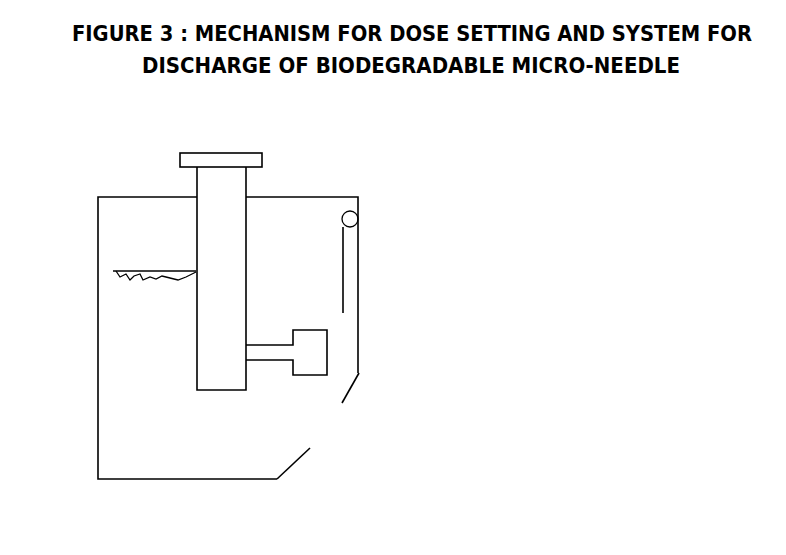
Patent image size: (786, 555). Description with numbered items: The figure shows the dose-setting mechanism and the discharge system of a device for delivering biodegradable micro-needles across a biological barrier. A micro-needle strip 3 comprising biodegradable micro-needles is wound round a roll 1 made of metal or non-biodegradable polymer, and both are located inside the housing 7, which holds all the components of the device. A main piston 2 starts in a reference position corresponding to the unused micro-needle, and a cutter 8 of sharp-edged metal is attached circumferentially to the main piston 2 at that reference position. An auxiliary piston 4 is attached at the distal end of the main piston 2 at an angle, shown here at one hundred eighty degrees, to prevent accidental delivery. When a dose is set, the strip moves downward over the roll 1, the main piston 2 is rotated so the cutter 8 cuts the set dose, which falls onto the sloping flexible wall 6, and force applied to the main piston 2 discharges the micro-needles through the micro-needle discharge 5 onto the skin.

The roll 1 is at (507, 248).
The main piston 2 is at (418, 271).
The micro-needle strip 3 is at (549, 254).
The auxiliary piston 4 is at (459, 359).
The micro-needle discharge 5 is at (516, 418).
The flexible wall 6 is at (433, 478).
The housing 7 is at (228, 365).
The cutter 8 is at (106, 217).